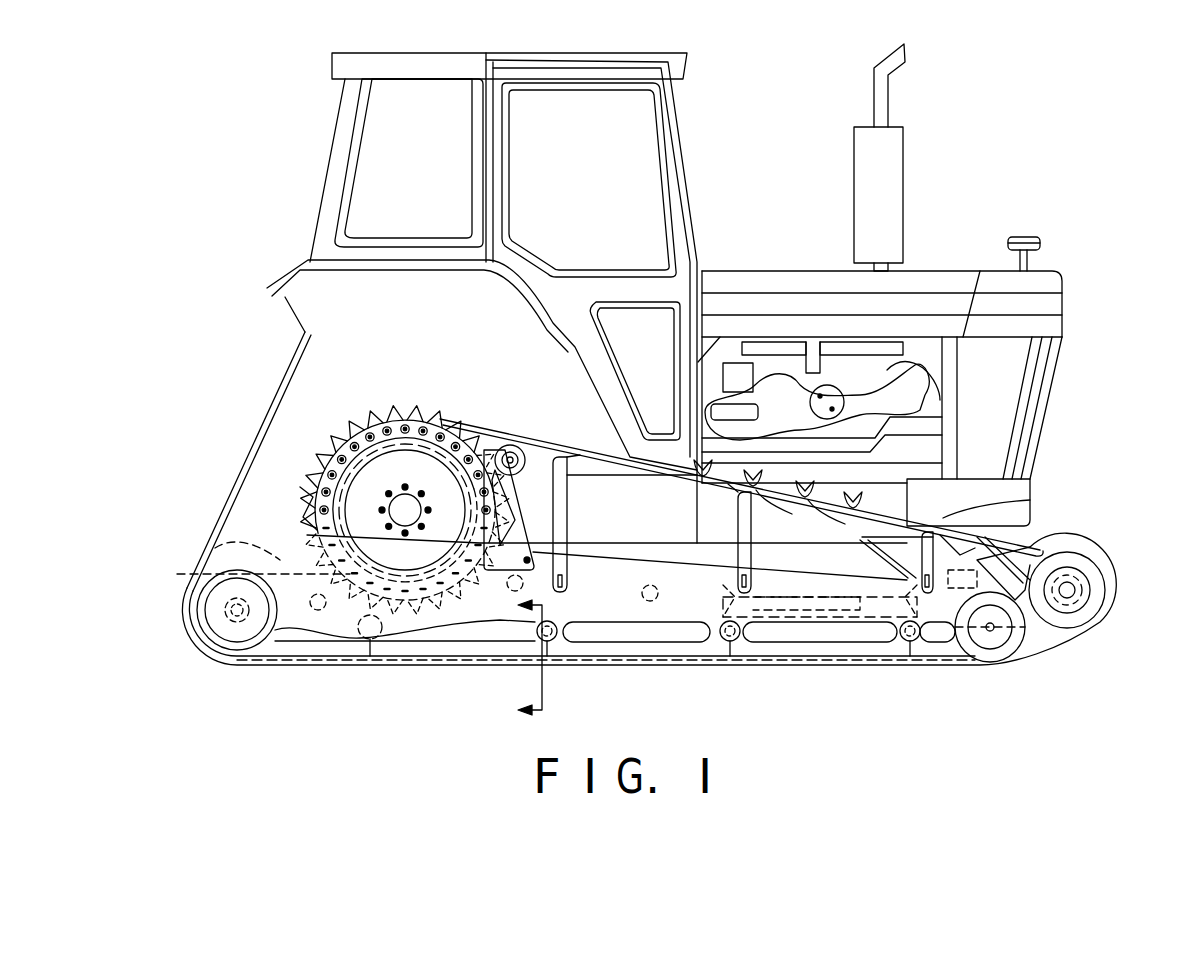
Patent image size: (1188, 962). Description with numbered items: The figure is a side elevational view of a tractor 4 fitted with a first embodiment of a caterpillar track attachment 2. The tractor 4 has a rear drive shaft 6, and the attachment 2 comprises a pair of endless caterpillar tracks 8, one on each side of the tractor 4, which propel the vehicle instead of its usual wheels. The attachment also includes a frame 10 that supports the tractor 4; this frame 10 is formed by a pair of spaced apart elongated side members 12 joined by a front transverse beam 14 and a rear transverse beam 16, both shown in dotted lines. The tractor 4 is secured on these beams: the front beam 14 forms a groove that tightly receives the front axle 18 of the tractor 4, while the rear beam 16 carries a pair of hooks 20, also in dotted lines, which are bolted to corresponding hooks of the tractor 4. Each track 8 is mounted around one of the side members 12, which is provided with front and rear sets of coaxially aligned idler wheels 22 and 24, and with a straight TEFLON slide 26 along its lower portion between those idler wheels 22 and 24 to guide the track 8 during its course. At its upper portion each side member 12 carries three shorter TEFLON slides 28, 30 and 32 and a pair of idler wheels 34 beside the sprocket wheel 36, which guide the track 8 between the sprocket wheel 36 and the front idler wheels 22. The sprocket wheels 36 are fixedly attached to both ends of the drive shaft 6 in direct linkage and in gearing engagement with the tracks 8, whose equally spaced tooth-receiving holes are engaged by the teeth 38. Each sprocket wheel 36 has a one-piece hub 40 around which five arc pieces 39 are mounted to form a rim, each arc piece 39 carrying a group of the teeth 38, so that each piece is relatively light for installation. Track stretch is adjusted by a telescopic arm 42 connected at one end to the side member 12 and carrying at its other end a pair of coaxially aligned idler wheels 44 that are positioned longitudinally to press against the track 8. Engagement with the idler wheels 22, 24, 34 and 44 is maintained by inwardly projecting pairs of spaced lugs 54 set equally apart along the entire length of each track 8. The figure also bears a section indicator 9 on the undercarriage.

The caterpillar track attachment 2 is at (715, 690).
The tractor 4 is at (750, 246).
The rear drive shaft 6 is at (400, 508).
The endless caterpillar tracks 8 is at (265, 512).
The section line 9 is at (544, 658).
The frame 10 is at (522, 630).
The elongated side members 12 is at (602, 595).
The front transverse beam 14 is at (1062, 538).
The rear transverse beam 16 is at (233, 563).
The front axle 18 is at (987, 547).
The hooks 20 is at (232, 540).
The front set of idler wheels 22 is at (968, 650).
The rear set of idler wheels 24 is at (218, 650).
The straight slide 26 is at (363, 667).
The shorter slide 28 is at (562, 462).
The shorter slide 30 is at (735, 510).
The shorter slide 32 is at (950, 533).
The idler wheels 34 is at (493, 445).
The sprocket wheel 36 is at (326, 421).
The teeth 38 is at (432, 410).
The arc pieces 39 is at (383, 422).
The one-piece hub 40 is at (317, 458).
The telescopic arm 42 is at (848, 656).
The idler wheels 44 is at (1100, 595).
The lugs 54 is at (806, 500).